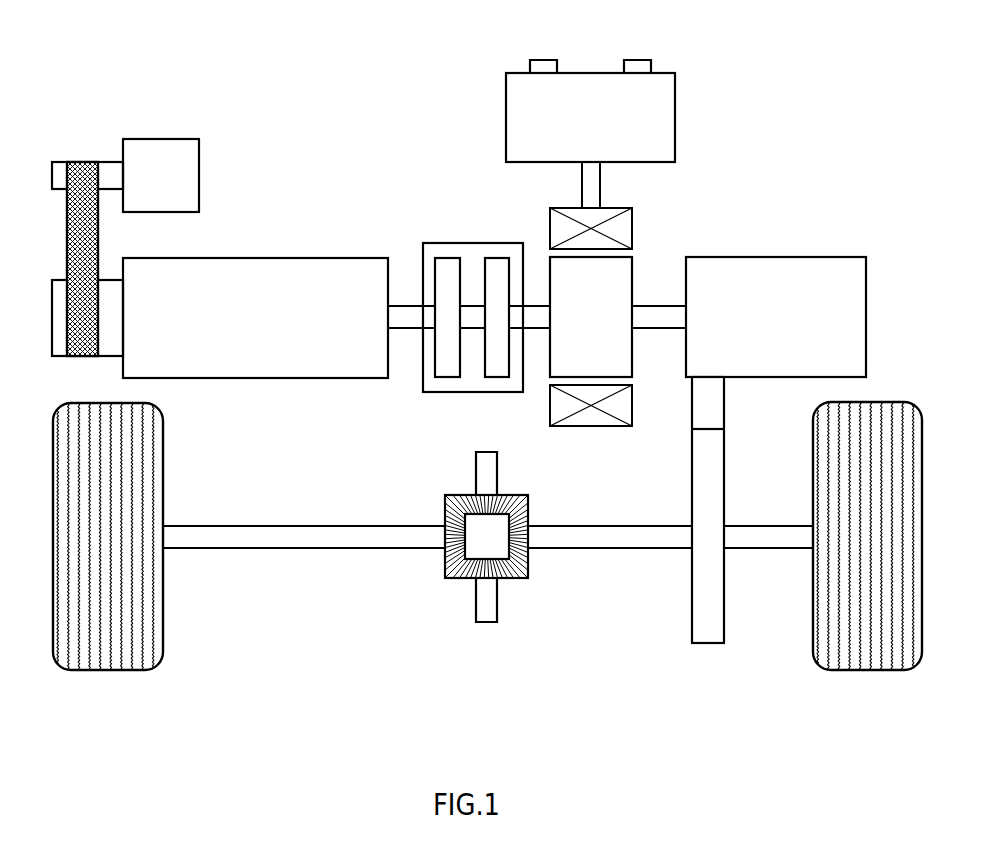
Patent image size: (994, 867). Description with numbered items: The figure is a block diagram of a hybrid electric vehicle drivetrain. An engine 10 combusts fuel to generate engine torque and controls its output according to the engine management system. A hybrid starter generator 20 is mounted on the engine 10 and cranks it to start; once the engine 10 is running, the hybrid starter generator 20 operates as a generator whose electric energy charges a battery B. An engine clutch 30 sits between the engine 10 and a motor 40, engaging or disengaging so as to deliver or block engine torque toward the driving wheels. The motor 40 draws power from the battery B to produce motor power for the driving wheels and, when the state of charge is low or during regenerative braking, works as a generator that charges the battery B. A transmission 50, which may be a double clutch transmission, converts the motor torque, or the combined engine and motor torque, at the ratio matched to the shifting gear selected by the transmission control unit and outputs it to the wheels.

The engine 10 is at (256, 258).
The hybrid starter generator 20 is at (159, 139).
The engine clutch 30 is at (471, 243).
The motor 40 is at (606, 350).
The transmission 50 is at (775, 257).
The battery B is at (589, 73).